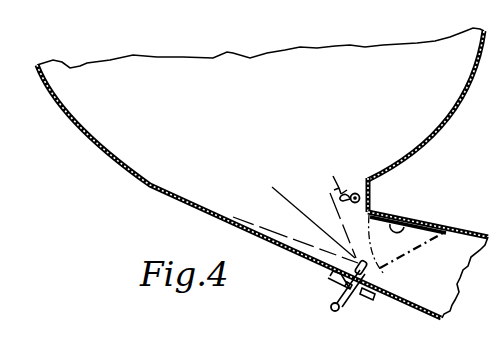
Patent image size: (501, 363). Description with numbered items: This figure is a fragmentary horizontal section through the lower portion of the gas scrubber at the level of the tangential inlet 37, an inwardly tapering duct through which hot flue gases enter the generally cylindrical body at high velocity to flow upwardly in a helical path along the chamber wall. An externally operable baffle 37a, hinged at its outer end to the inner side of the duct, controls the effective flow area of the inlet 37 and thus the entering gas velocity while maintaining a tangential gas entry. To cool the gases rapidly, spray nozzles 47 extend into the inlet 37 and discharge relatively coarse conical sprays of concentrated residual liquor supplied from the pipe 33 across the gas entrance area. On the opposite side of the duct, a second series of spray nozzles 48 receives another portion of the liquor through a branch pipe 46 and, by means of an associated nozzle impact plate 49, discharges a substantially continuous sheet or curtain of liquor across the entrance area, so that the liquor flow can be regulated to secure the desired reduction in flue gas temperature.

The pipe 33 is at (336, 310).
The tangential inlet 37 is at (452, 268).
The baffle 37a is at (418, 222).
The branch pipe 46 is at (367, 198).
The spray nozzles 47 is at (372, 272).
The spray nozzles 48 is at (354, 193).
The nozzle impact plate 49 is at (332, 170).